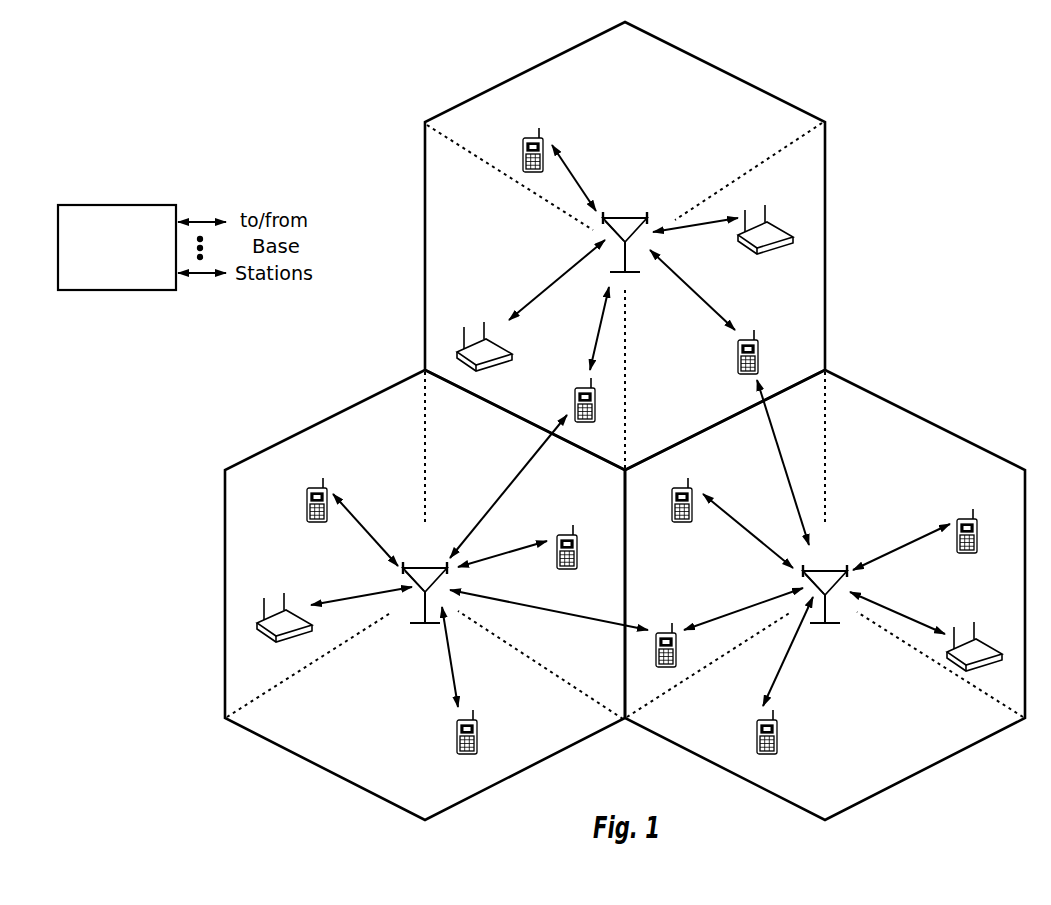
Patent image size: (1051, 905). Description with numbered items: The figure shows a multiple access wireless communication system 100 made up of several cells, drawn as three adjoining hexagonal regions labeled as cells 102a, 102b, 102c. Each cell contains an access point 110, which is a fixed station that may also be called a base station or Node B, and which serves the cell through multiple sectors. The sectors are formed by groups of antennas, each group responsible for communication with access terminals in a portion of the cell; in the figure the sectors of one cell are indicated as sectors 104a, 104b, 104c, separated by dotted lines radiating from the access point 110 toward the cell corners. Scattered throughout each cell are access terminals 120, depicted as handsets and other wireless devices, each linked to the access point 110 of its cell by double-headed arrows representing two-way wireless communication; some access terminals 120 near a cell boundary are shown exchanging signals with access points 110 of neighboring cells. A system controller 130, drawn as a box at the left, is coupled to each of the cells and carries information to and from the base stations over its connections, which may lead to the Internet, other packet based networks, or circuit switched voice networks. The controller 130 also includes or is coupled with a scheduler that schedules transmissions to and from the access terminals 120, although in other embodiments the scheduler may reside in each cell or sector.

The multiple access wireless communication system 100 is at (962, 84).
The cell 102a is at (723, 71).
The cell 102b is at (338, 414).
The cell 102c is at (935, 406).
The sector 104a is at (646, 77).
The sector 104b is at (480, 219).
The sector 104c is at (713, 412).
The access point 110 is at (626, 218).
The access terminal 120 is at (523, 142).
The controller 130 is at (112, 205).